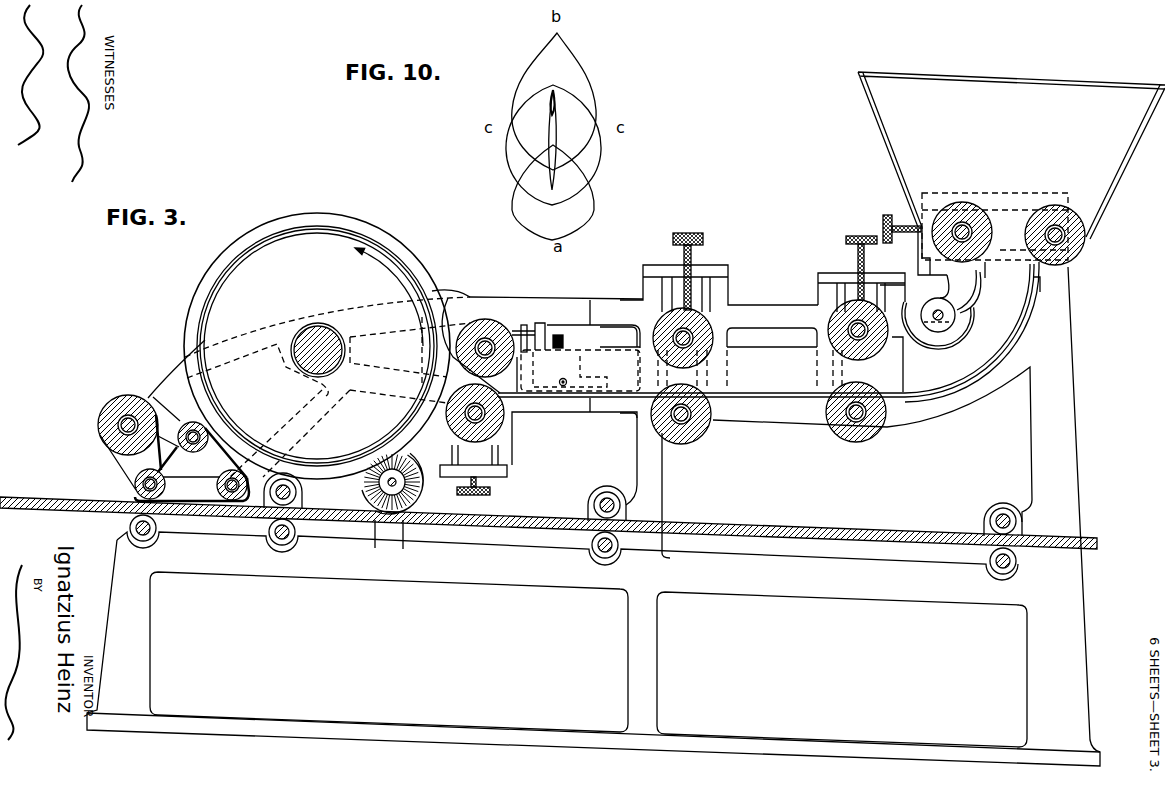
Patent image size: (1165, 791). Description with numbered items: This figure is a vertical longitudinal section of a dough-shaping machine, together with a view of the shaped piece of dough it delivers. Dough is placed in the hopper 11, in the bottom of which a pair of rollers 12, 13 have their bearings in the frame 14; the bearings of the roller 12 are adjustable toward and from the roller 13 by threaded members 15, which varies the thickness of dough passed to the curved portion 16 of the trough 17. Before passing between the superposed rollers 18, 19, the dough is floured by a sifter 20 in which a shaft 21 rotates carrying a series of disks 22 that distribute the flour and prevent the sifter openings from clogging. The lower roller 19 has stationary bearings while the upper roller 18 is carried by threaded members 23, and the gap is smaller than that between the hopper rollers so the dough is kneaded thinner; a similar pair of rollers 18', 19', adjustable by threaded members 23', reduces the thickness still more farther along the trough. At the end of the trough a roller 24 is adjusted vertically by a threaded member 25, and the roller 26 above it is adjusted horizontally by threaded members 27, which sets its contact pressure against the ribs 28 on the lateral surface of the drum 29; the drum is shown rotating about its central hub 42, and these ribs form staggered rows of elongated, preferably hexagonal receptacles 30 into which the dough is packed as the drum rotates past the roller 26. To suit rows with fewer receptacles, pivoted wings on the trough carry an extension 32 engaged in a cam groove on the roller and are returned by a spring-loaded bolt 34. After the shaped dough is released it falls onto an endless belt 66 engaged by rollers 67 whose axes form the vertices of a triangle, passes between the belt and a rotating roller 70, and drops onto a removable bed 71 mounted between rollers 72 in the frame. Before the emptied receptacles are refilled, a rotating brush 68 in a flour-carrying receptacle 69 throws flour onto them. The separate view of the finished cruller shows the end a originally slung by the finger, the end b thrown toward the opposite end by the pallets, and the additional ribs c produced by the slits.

The hopper 11 is at (984, 90).
The roller 12 is at (965, 205).
The roller 13 is at (1050, 205).
The frame 14 is at (1063, 290).
The threaded members 15 is at (887, 216).
The curved portion 16 is at (1014, 332).
The trough 17 is at (757, 397).
The roller 18 is at (840, 330).
The roller 18' is at (721, 346).
The roller 19 is at (863, 417).
The roller 19' is at (682, 425).
The sifter 20 is at (952, 342).
The shaft 21 is at (936, 312).
The disks 22 is at (970, 308).
The threaded members 23 is at (861, 314).
The threaded members 23' is at (719, 272).
The roller 24 is at (505, 421).
The threaded member 25 is at (491, 491).
The roller 26 is at (479, 320).
The threaded members 27 is at (537, 322).
The ribs 28 is at (398, 256).
The drum 29 is at (323, 230).
The receptacles 30 is at (582, 386).
The extension 32 is at (523, 324).
The bolt 34 is at (566, 379).
The wheel hub 42 is at (322, 333).
The endless belt 66 is at (163, 445).
The rollers 67 is at (190, 483).
The rotating brush 68 is at (421, 489).
The flour-carrying receptacle 69 is at (412, 508).
The roller 70 is at (128, 410).
The removable bed 71 is at (72, 508).
The rollers 72 is at (292, 493).